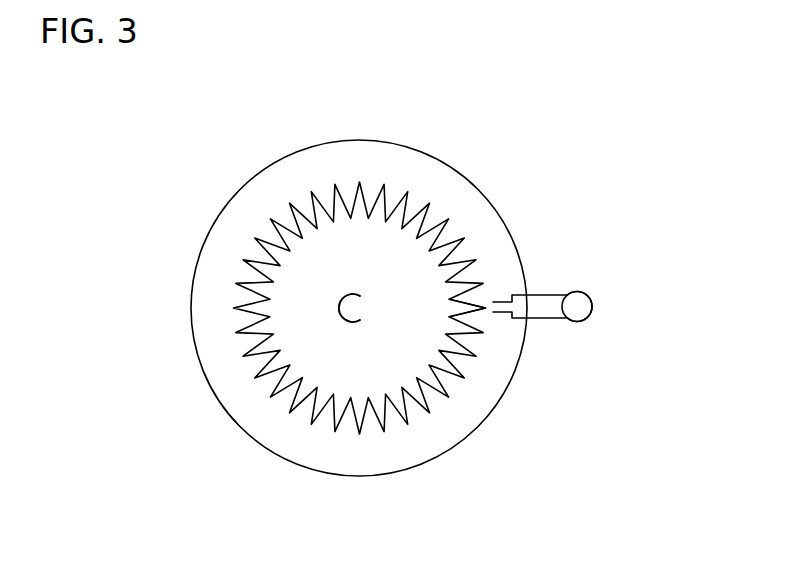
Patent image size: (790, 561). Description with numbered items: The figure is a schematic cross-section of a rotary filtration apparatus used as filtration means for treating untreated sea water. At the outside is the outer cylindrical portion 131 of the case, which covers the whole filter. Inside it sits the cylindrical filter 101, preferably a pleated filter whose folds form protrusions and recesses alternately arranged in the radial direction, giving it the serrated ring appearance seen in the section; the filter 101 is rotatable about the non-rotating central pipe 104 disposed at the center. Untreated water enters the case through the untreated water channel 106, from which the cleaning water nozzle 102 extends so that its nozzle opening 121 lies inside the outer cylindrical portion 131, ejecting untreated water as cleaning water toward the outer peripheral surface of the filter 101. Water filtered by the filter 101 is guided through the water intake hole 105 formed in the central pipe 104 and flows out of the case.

The outer cylindrical portion 131 is at (340, 140).
The cylindrical filter 101 is at (260, 352).
The nozzle opening 121 is at (490, 312).
The cleaning water nozzle 102 is at (502, 300).
The untreated water channel 106 is at (592, 305).
The water intake hole 105 is at (360, 307).
The central pipe 104 is at (353, 322).